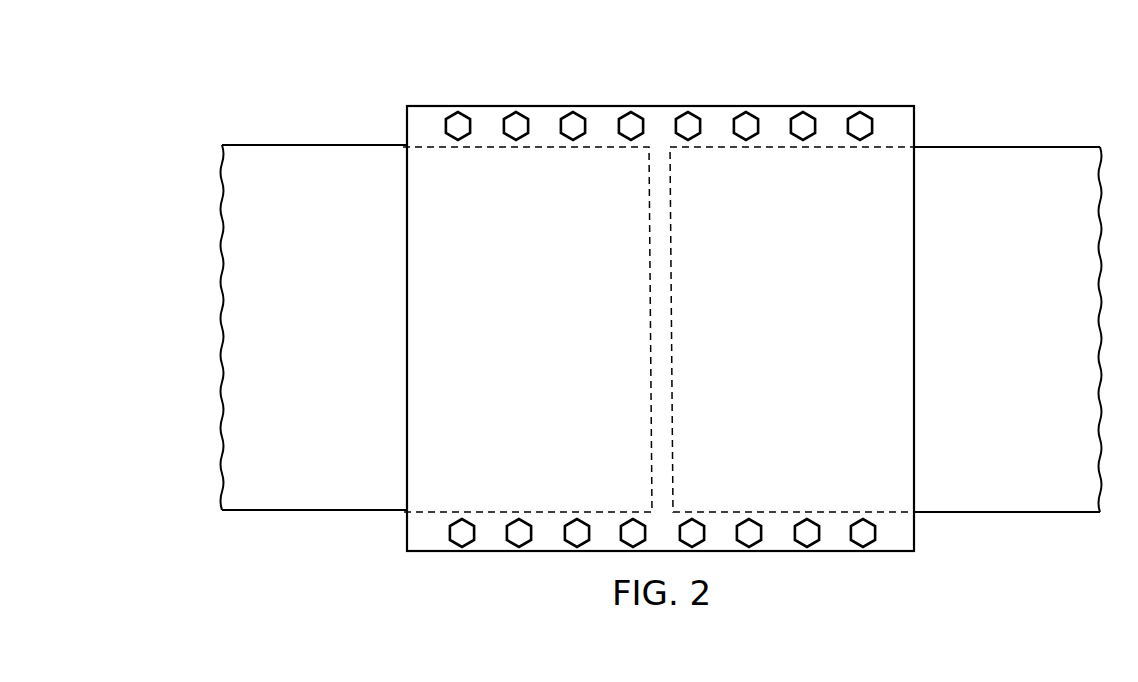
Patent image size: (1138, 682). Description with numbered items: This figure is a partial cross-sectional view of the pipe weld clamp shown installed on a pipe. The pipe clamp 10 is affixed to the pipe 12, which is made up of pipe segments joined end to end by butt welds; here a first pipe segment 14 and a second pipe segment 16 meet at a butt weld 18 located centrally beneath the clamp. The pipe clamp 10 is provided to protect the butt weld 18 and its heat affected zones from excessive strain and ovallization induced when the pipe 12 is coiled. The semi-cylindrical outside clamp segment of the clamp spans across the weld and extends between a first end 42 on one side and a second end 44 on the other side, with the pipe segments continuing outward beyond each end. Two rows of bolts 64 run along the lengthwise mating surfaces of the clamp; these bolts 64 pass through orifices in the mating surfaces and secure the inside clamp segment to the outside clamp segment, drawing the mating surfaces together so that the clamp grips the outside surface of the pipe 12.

The pipe clamp 10 is at (730, 74).
The pipe 12 is at (1015, 104).
The first pipe segment 14 is at (332, 343).
The second pipe segment 16 is at (1018, 343).
The butt weld 18 is at (673, 327).
The first end 42 is at (936, 446).
The second end 44 is at (388, 446).
The bolts 64 is at (808, 118).